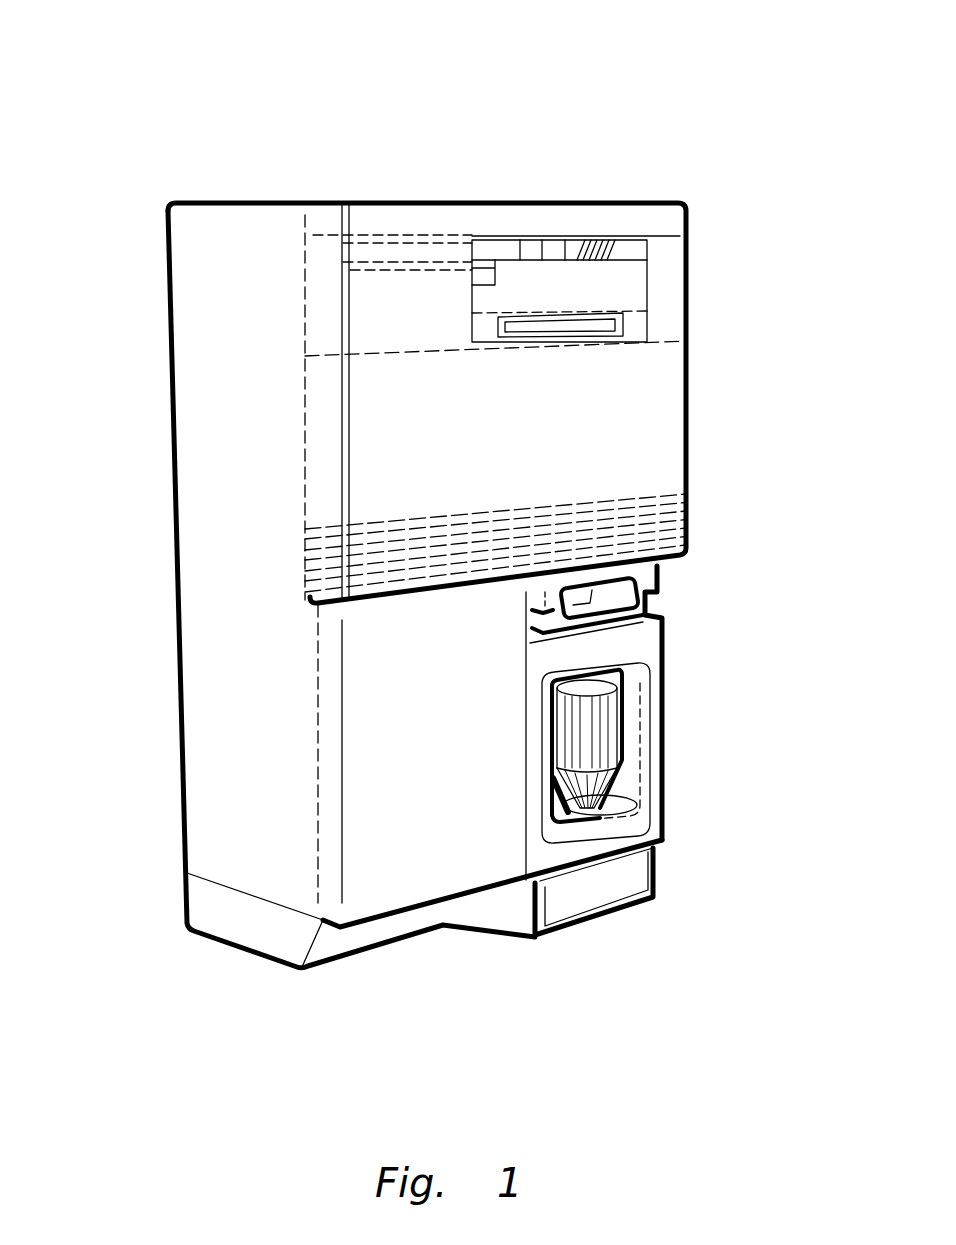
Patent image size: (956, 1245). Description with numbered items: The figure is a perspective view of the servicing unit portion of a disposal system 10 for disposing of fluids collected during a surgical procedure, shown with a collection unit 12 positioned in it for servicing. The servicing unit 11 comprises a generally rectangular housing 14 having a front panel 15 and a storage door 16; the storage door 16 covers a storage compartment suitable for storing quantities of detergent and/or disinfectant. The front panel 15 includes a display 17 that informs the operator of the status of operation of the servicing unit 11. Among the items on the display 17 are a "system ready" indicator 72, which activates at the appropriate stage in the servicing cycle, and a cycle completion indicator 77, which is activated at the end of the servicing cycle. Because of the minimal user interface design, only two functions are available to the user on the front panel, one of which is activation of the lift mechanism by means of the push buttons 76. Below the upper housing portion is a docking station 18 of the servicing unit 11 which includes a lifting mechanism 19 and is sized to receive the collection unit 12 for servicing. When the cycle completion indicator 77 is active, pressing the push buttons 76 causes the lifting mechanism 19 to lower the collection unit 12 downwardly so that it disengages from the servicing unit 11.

The disposal system 10 is at (720, 172).
The servicing unit 11 is at (157, 263).
The collection unit 12 is at (640, 687).
The housing 14 is at (252, 757).
The front panel 15 is at (638, 468).
The storage door 16 is at (387, 867).
The display 17 is at (470, 232).
The docking station 18 is at (740, 660).
The lifting mechanism 19 is at (657, 878).
The system ready indicator 72 is at (477, 275).
The push buttons 76 is at (481, 323).
The cycle completion indicator 77 is at (633, 245).